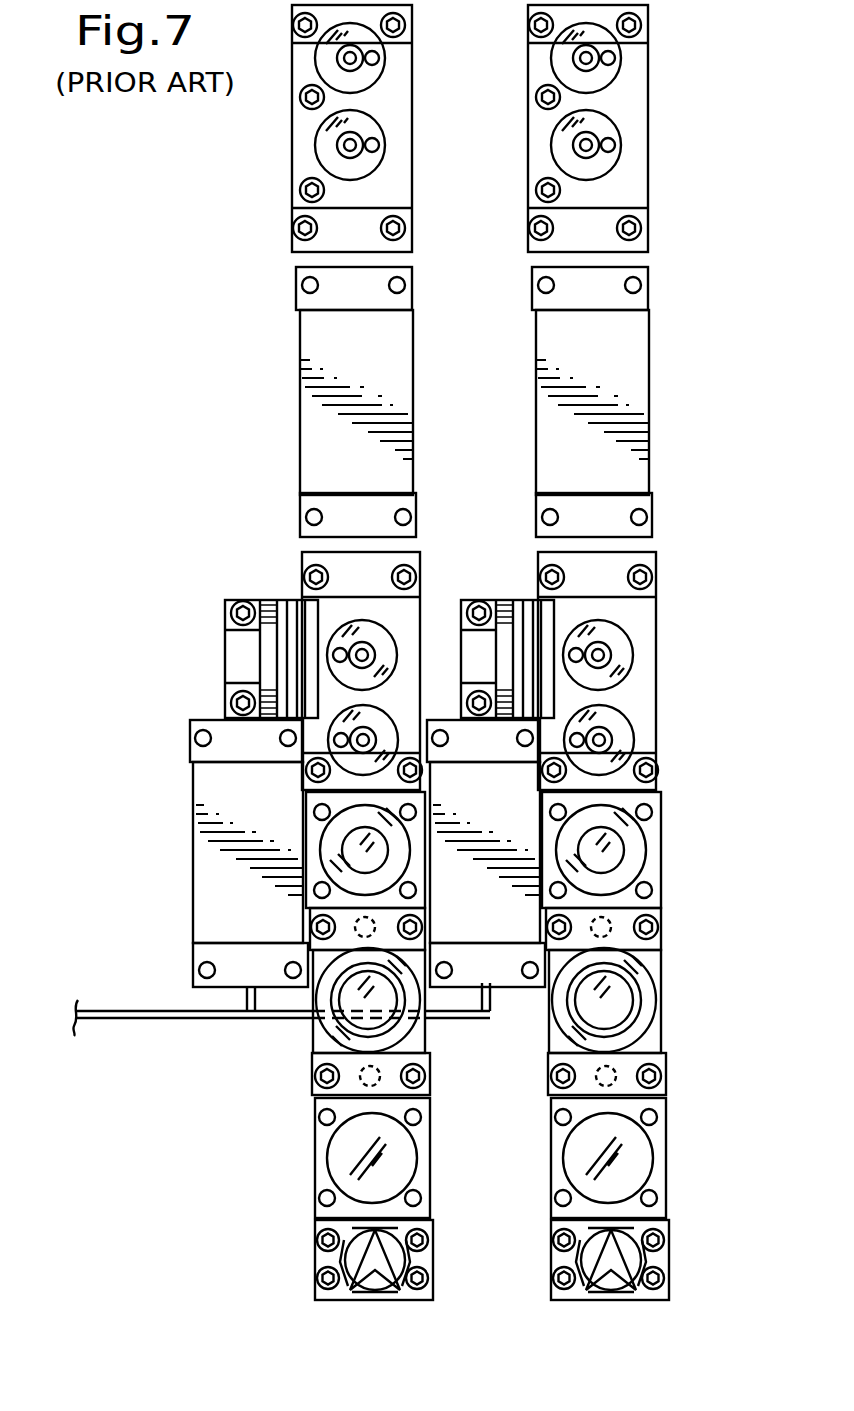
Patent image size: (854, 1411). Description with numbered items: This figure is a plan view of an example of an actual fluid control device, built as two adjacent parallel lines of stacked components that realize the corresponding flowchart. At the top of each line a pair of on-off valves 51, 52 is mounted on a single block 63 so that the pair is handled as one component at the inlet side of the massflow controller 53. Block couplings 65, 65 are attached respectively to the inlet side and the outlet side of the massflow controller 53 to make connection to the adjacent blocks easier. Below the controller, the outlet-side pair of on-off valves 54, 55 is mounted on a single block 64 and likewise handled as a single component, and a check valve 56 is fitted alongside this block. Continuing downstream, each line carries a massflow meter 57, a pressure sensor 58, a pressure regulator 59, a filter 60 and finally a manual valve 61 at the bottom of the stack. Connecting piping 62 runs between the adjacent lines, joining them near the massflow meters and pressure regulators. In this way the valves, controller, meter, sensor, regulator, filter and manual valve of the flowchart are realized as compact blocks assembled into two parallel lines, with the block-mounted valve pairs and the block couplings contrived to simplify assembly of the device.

The on-off valve 51 is at (377, 70).
The on-off valve 52 is at (377, 160).
The massflow controller 53 is at (410, 396).
The on-off valve 54 is at (393, 740).
The on-off valve 55 is at (390, 638).
The check valve 56 is at (253, 600).
The massflow meter 57 is at (200, 847).
The pressure sensor 58 is at (313, 830).
The pressure regulator 59 is at (316, 1038).
The filter 60 is at (428, 1157).
The manual valve 61 is at (430, 1257).
The connecting piping 62 is at (187, 1021).
The block 63 is at (405, 185).
The block 64 is at (323, 687).
The block coupling 65 is at (298, 287).